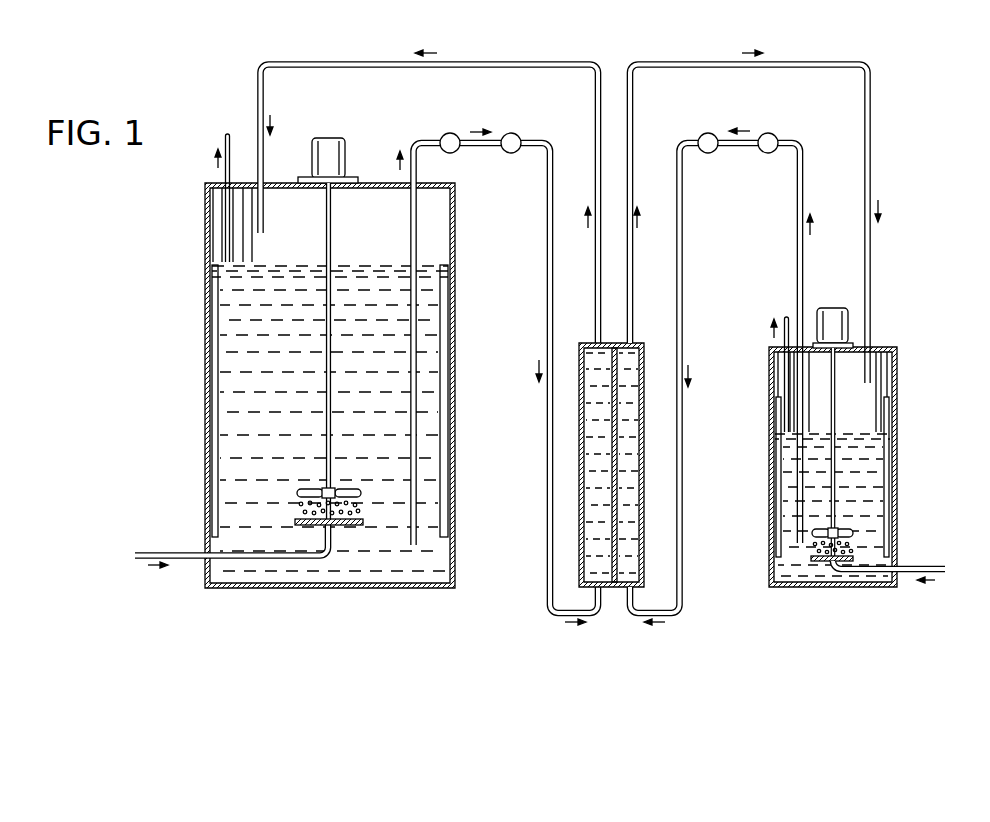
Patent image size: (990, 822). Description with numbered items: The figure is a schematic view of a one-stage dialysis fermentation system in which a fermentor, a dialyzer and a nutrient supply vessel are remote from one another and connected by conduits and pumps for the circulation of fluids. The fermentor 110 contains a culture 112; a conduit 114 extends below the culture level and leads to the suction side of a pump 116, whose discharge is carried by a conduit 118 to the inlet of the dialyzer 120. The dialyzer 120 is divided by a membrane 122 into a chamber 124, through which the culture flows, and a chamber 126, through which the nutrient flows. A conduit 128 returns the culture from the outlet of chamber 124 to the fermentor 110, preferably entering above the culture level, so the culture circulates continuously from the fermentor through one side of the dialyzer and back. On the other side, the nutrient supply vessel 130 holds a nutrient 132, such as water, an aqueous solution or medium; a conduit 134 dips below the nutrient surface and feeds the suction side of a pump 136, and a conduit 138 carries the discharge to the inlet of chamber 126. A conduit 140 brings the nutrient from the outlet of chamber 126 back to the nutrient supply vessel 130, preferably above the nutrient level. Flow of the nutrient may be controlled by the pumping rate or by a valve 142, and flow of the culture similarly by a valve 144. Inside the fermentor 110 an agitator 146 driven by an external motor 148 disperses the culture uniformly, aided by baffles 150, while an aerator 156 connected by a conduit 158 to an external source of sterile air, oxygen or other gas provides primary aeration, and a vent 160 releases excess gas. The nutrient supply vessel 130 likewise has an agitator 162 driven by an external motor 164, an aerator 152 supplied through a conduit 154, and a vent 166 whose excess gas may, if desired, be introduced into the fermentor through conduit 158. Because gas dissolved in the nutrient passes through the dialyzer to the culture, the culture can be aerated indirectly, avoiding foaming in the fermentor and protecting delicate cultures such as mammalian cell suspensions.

The fermentor 110 is at (897, 380).
The culture 112 is at (870, 485).
The conduit 114 is at (797, 232).
The pump 116 is at (768, 133).
The conduit 118 is at (683, 277).
The dialyzer 120 is at (579, 484).
The membrane 122 is at (613, 428).
The chamber 124 is at (635, 528).
The chamber 126 is at (592, 527).
The conduit 128 is at (677, 62).
The nutrient supply vessel 130 is at (206, 335).
The nutrient 132 is at (232, 386).
The conduit 134 is at (412, 140).
The pump 136 is at (450, 133).
The conduit 138 is at (547, 277).
The conduit 140 is at (498, 62).
The valve 142 is at (511, 133).
The valve 144 is at (708, 133).
The agitator 146 is at (843, 533).
The motor 148 is at (831, 318).
The baffles 150 is at (884, 452).
The aerator 152 is at (300, 531).
The conduit 154 is at (165, 551).
The aerator 156 is at (828, 563).
The conduit 158 is at (937, 567).
The vent 160 is at (785, 320).
The agitator 162 is at (303, 490).
The motor 164 is at (323, 146).
The vent 166 is at (224, 134).